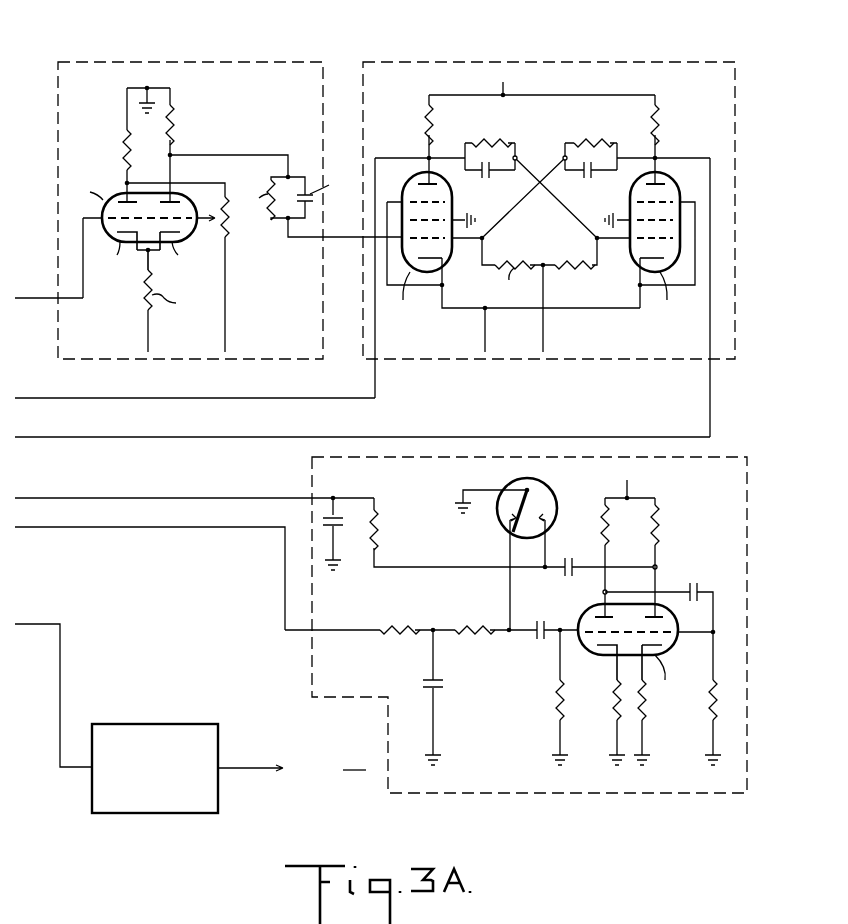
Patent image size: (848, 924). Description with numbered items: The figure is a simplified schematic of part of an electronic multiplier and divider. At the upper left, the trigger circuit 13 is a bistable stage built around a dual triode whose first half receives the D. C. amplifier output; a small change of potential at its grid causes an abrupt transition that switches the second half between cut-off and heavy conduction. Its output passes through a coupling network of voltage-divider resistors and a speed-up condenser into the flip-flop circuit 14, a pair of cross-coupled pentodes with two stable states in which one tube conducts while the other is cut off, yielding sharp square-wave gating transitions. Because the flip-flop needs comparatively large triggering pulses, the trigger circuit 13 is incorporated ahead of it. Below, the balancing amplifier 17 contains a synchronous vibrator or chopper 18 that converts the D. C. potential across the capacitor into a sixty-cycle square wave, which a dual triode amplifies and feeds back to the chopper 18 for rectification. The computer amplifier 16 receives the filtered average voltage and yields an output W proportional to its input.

The trigger circuit 13 is at (302, 58).
The flip-flop circuit 14 is at (671, 59).
The computer amplifier 16 is at (188, 724).
The balancing amplifier 17 is at (755, 497).
The synchronous vibrator or chopper 18 is at (555, 503).